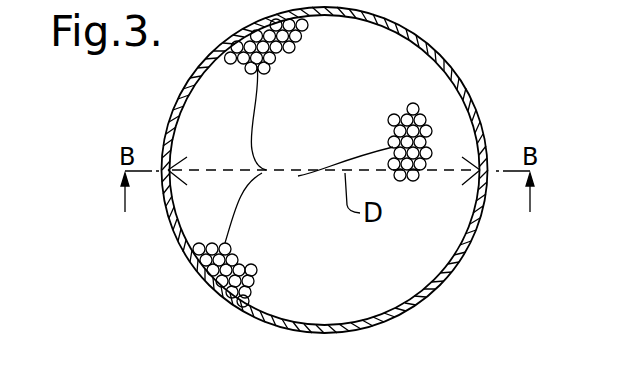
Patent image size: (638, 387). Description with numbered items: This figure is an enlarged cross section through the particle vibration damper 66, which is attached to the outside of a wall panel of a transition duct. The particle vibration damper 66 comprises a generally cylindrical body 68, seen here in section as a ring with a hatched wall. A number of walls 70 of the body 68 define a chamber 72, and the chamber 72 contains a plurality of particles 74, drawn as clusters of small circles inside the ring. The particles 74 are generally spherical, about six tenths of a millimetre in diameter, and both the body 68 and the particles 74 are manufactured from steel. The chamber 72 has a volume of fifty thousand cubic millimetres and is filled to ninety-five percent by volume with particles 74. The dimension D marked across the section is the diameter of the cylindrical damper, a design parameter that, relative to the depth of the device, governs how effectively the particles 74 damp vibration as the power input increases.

The particle vibration damper 66 is at (462, 59).
The cylindrical body 68 is at (495, 126).
The walls 70 is at (470, 254).
The chamber 72 is at (407, 273).
The particles 74 is at (309, 154).